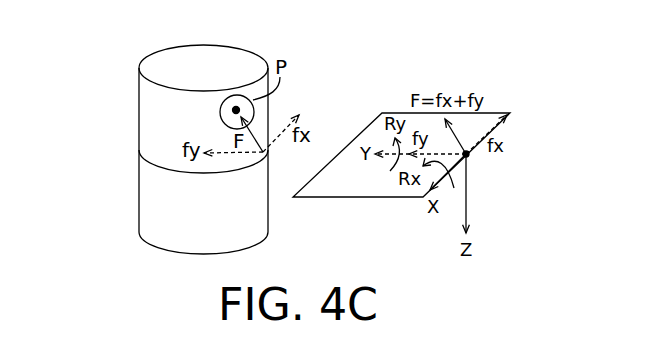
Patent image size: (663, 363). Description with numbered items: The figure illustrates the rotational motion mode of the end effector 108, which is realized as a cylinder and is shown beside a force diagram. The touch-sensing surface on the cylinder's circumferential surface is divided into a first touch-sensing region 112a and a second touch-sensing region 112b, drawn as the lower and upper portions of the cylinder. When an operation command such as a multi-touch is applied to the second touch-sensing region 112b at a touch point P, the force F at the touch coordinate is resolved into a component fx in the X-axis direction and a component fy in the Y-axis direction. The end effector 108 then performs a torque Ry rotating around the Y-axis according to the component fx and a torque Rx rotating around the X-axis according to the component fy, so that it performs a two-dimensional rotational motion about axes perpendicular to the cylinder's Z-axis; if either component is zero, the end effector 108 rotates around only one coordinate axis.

The end effector 108 is at (203, 140).
The first touch-sensing region 112a is at (137, 200).
The second touch-sensing region 112b is at (137, 110).